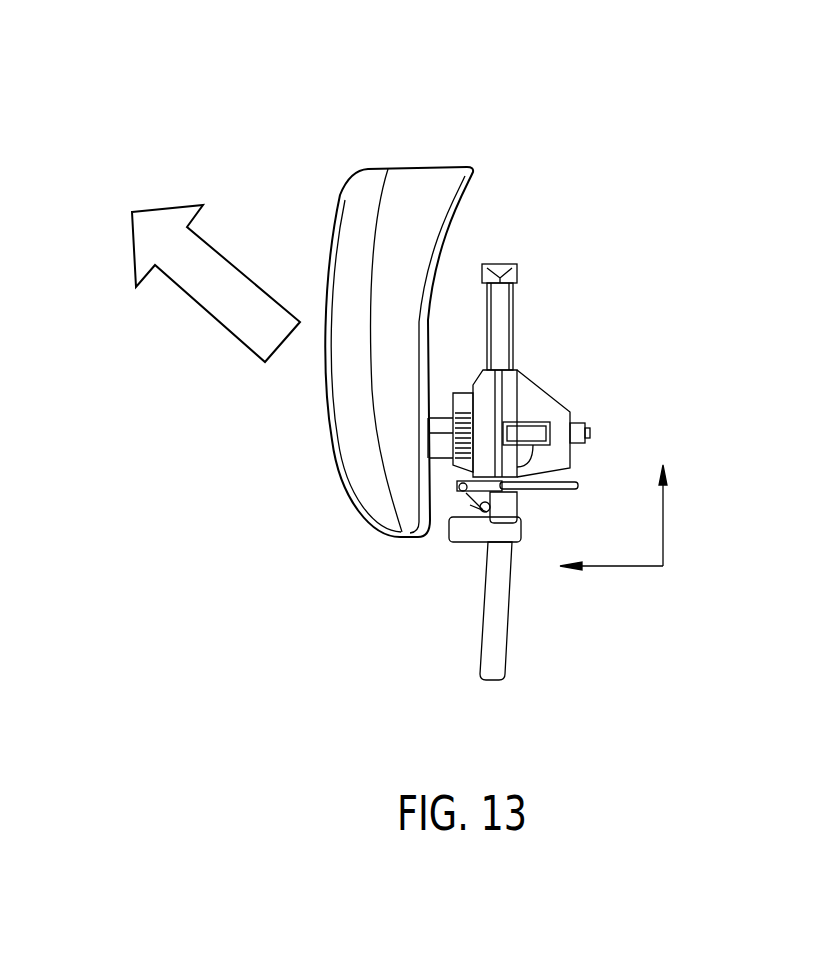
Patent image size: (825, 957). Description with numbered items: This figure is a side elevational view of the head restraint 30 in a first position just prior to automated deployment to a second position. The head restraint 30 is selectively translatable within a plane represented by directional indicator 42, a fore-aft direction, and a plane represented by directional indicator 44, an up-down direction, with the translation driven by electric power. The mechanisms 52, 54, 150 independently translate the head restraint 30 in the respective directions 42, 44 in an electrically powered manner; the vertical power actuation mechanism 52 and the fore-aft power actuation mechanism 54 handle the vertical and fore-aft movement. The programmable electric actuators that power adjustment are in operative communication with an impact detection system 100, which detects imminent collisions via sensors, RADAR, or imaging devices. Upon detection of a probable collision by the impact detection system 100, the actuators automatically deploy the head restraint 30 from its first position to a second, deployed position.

The head restraint 30 is at (425, 180).
The impact detection system 100 is at (565, 416).
The vertical power actuation mechanism 52 is at (565, 370).
The fore-aft power actuation mechanism 54 is at (565, 370).
The mechanism 150 is at (568, 373).
The directional indicator 44 is at (665, 497).
The directional indicator 42 is at (608, 568).